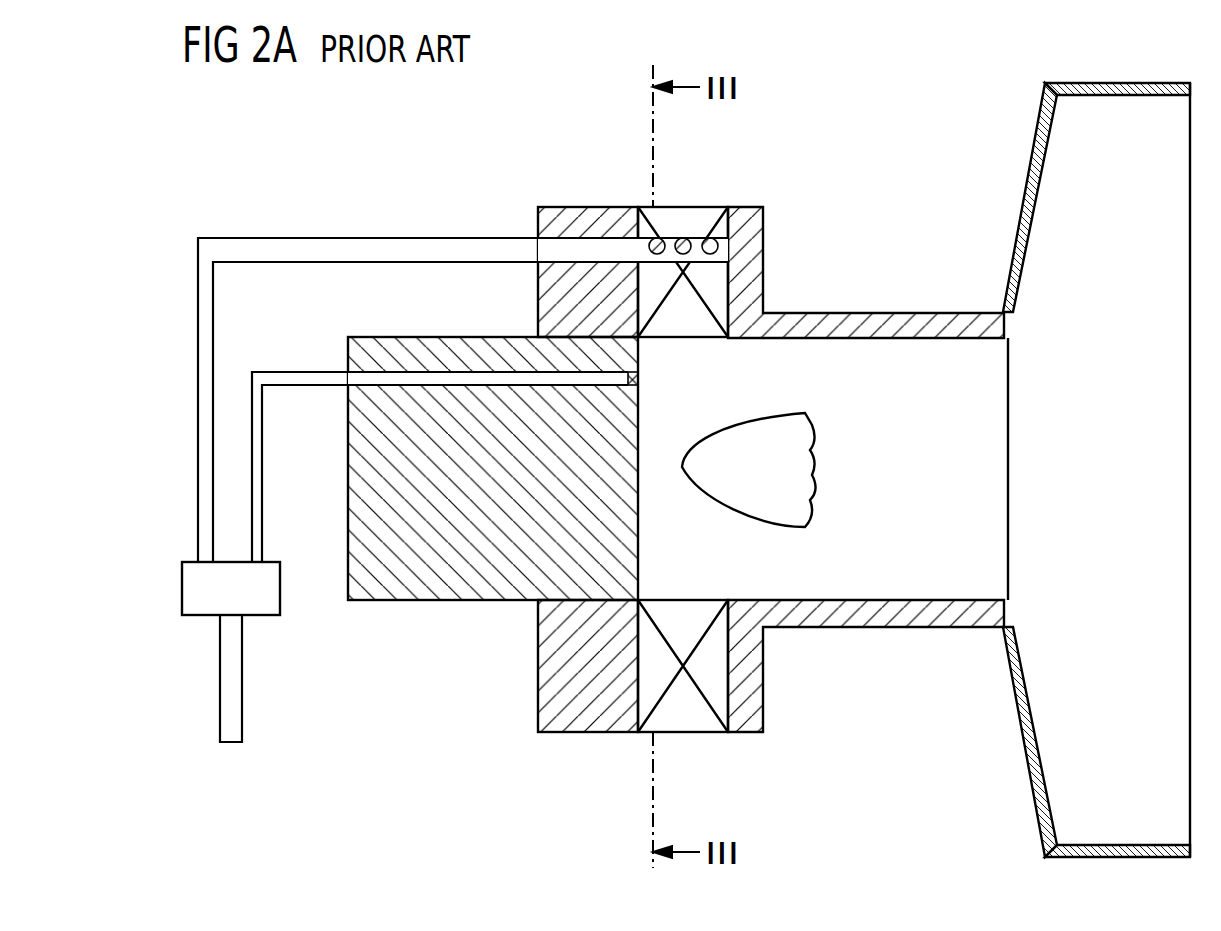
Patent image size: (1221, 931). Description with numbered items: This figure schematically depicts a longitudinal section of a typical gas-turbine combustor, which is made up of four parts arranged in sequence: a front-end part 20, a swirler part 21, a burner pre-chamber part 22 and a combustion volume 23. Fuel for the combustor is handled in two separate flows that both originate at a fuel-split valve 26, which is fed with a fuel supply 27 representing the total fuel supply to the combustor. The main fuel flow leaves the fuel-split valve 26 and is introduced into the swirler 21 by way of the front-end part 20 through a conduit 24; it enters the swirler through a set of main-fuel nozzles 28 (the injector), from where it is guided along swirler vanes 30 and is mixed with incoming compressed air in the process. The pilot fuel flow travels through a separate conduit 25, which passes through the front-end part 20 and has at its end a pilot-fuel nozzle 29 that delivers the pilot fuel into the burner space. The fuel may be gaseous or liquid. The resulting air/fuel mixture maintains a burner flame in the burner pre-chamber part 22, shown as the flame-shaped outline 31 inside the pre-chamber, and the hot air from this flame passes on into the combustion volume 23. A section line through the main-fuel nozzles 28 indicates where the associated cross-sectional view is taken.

The front-end part 20 is at (500, 656).
The swirler part 21 is at (731, 180).
The burner pre-chamber part 22 is at (873, 270).
The combustion volume 23 is at (1117, 235).
The conduit 24 is at (370, 248).
The conduit 25 is at (258, 479).
The fuel-split valve 26 is at (270, 596).
The fuel supply 27 is at (232, 675).
The main-fuel nozzles 28 is at (710, 237).
The pilot-fuel nozzle 29 is at (640, 378).
The swirler vanes 30 is at (1000, 470).
The plasma flame 31 is at (625, 515).